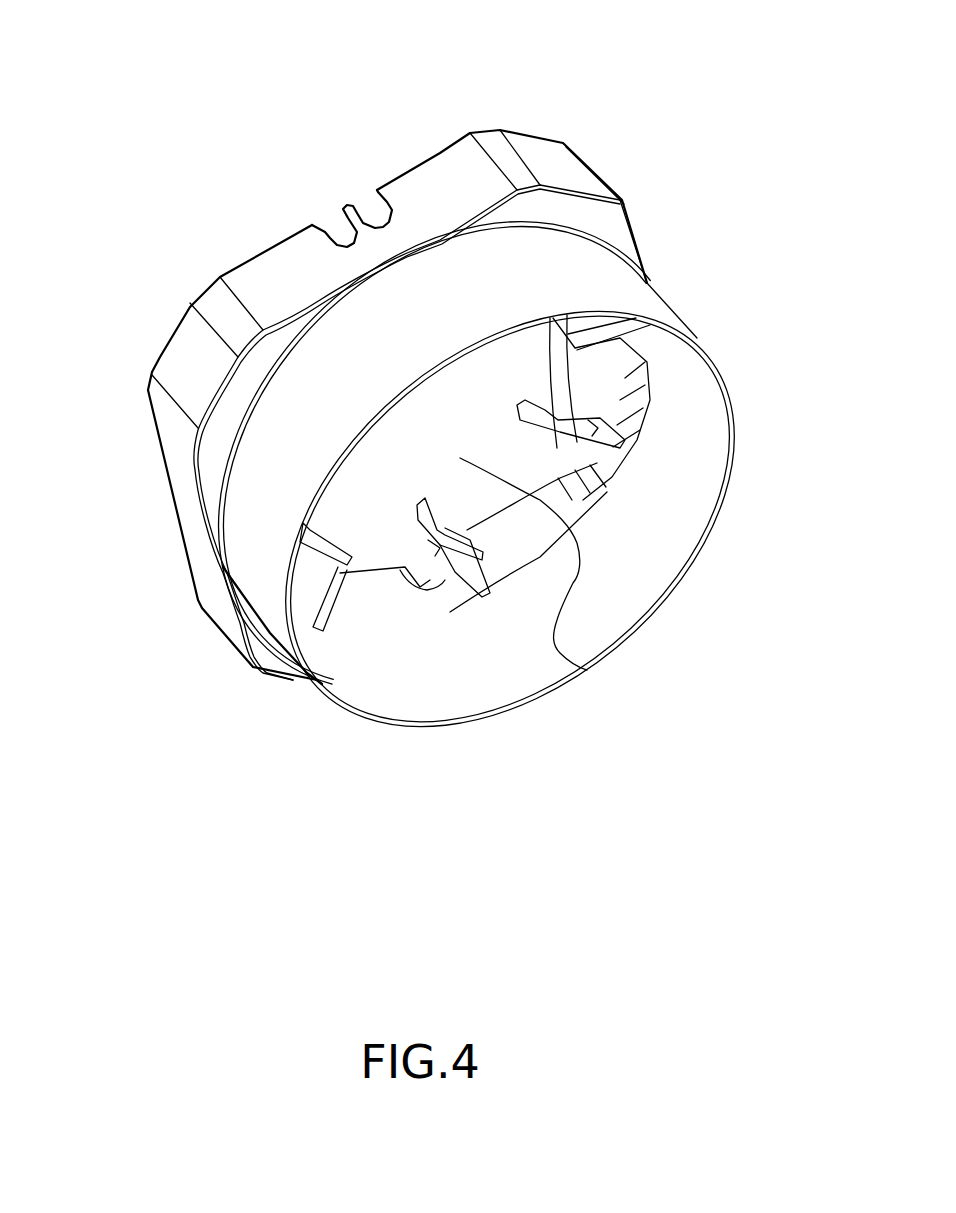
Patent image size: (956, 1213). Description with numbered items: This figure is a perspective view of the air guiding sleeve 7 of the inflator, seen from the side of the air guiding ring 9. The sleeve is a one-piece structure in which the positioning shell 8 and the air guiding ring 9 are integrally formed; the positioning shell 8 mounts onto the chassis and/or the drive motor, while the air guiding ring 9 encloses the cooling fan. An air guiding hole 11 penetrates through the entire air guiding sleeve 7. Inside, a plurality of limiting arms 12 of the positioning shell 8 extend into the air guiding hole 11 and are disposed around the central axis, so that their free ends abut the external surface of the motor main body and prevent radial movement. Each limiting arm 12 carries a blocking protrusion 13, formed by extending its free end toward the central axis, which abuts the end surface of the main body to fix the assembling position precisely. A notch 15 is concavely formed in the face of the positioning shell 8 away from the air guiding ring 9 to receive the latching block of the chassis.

The air guiding sleeve 7 is at (541, 151).
The positioning shell 8 is at (615, 232).
The air guiding ring 9 is at (650, 305).
The air guiding hole 11 is at (587, 670).
The limiting arm 12 is at (567, 430).
The blocking protrusion 13 is at (350, 574).
The notch 15 is at (333, 237).